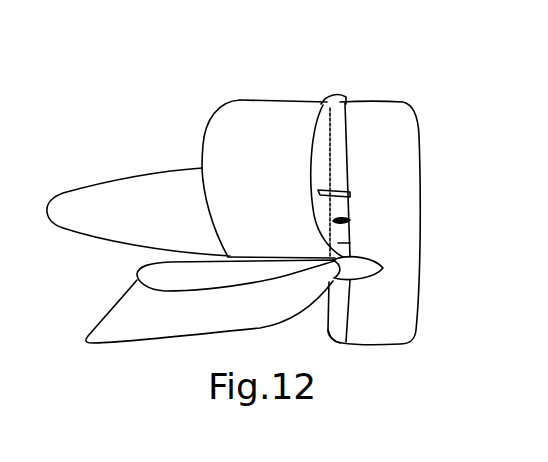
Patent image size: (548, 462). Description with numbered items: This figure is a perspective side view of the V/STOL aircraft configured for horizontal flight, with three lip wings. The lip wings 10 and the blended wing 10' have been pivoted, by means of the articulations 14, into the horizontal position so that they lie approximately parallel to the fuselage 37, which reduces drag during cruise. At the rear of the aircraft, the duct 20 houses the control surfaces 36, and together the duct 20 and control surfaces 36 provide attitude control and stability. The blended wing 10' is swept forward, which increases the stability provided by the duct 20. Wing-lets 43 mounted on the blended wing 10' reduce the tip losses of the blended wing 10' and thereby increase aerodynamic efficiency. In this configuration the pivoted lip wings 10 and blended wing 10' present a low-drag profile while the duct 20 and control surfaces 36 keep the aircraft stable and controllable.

The lip wing 10 is at (260, 167).
The blended wing 10' is at (204, 332).
The articulation 14 is at (333, 102).
The duct 20 is at (378, 338).
The control surface 36 is at (340, 158).
The fuselage 37 is at (132, 183).
The wing-let 43 is at (197, 285).